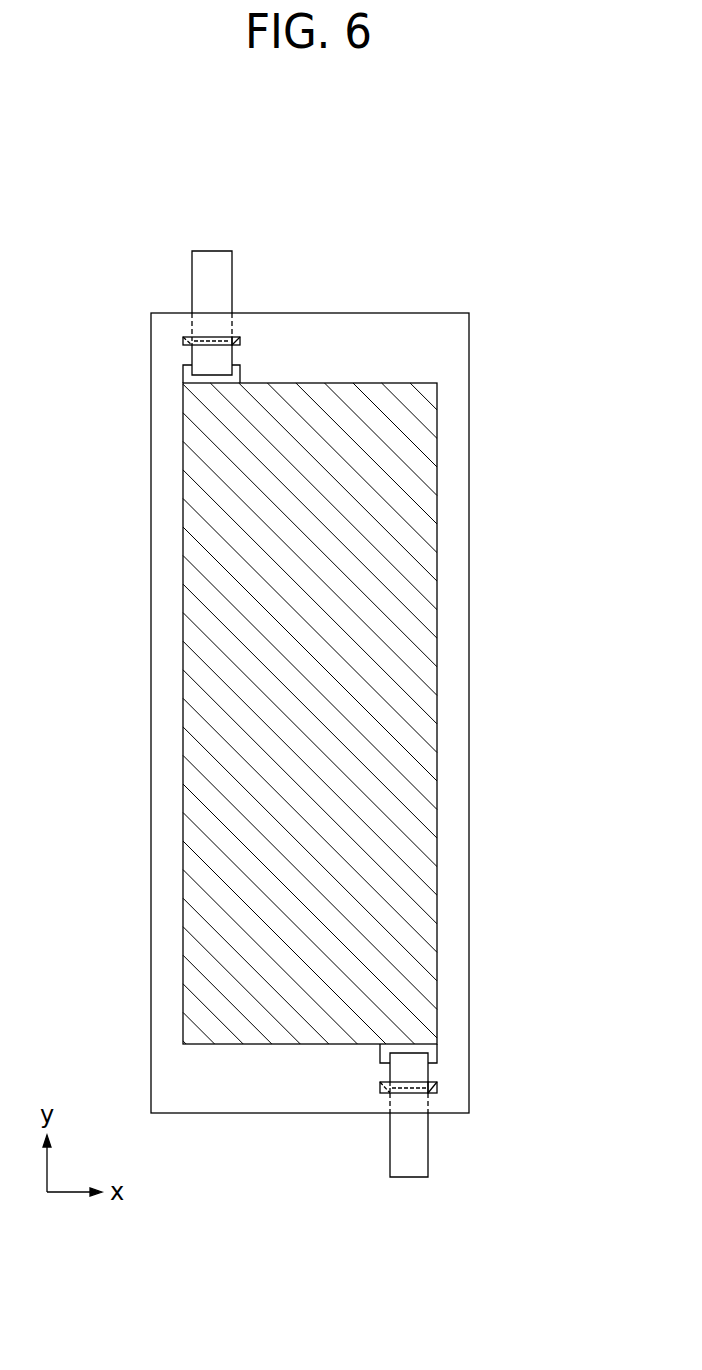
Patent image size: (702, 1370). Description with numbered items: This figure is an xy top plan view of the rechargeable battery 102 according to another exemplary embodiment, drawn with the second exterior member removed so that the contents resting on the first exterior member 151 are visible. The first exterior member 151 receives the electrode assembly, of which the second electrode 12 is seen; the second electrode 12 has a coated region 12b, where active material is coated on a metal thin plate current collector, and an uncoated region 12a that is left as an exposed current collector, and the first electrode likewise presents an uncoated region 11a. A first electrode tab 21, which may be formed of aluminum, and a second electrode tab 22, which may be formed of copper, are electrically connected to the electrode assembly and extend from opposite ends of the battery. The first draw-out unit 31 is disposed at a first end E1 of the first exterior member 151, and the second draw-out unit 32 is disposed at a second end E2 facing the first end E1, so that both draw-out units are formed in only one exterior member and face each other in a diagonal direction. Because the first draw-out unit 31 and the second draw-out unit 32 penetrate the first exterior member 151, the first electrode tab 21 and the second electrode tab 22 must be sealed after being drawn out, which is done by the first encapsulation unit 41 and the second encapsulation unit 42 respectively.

The rechargeable battery 102 is at (398, 182).
The first exterior member 151 is at (469, 693).
The second electrode 12 is at (380, 726).
The uncoated region 12a is at (433, 1049).
The coated region 12b is at (413, 990).
The uncoated region 11a is at (186, 373).
The first electrode tab 21 is at (211, 266).
The second electrode tab 22 is at (409, 1162).
The first draw-out unit 31 is at (186, 337).
The second draw-out unit 32 is at (385, 1094).
The first encapsulation unit 41 is at (236, 337).
The second encapsulation unit 42 is at (432, 1094).
The first end E1 is at (142, 313).
The second end E2 is at (142, 1044).